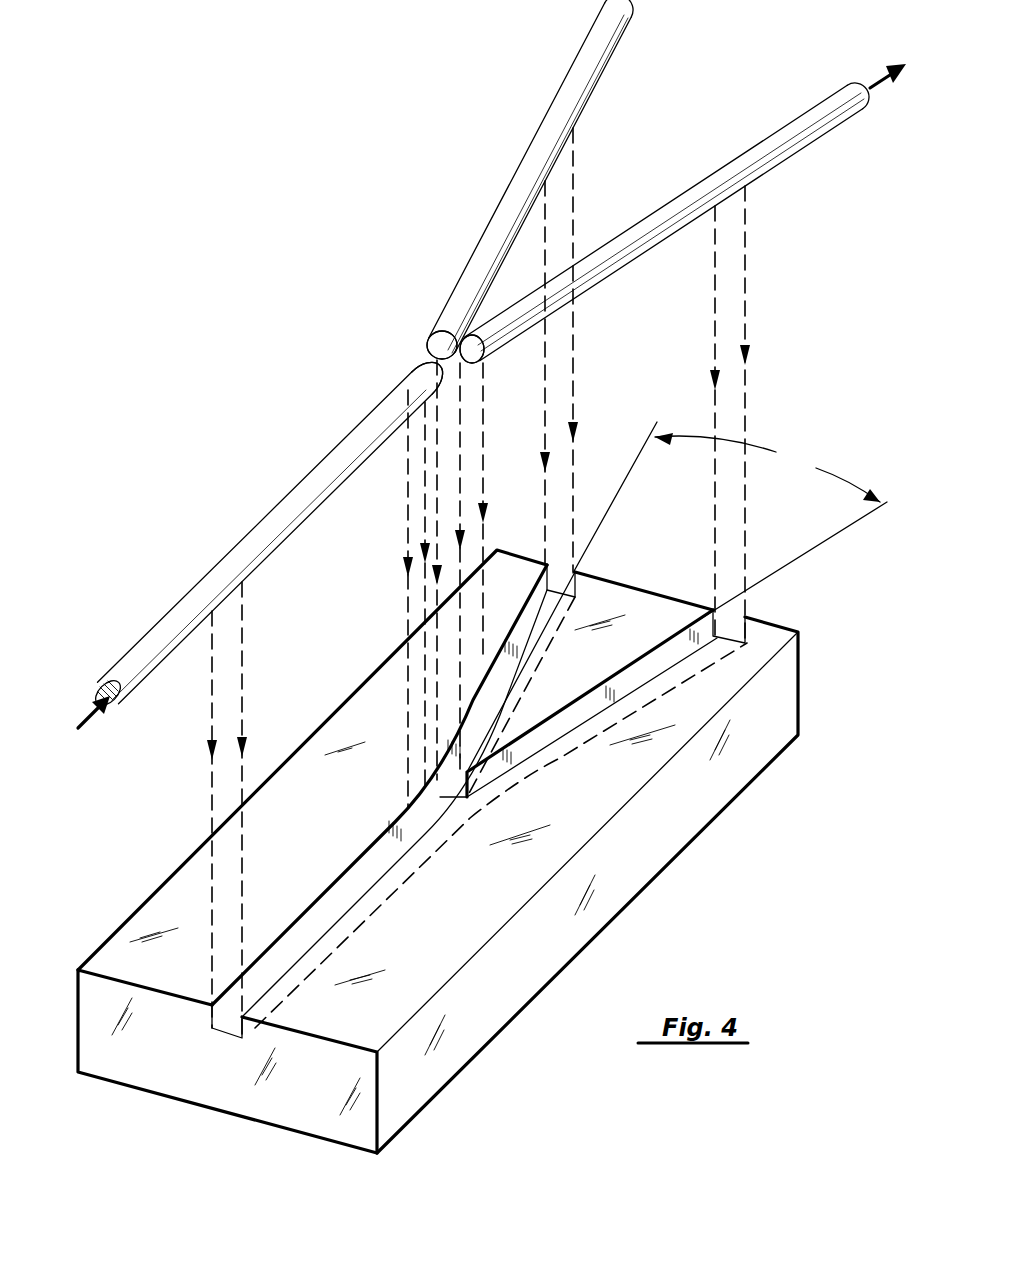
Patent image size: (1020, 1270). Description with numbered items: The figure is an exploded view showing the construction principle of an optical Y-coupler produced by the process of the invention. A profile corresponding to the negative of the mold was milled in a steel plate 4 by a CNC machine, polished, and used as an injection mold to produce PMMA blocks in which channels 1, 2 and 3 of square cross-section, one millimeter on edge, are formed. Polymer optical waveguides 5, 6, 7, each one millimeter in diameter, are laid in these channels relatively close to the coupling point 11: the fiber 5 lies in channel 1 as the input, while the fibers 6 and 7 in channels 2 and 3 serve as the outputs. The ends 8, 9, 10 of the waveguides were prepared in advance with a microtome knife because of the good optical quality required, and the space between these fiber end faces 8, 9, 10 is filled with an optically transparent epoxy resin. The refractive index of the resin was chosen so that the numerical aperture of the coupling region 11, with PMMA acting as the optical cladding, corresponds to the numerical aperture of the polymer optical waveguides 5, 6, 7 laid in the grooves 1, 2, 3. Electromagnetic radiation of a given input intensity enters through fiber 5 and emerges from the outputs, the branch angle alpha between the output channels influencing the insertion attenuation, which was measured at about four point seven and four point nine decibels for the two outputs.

The channel 1 is at (310, 920).
The channel 2 is at (535, 600).
The channel 3 is at (730, 622).
The steel plate 4 is at (497, 1012).
The polymer optical waveguide 5 is at (138, 655).
The polymer optical waveguide 6 is at (600, 54).
The polymer optical waveguide 7 is at (843, 128).
The fiber end face 8 is at (430, 378).
The fiber end face 9 is at (437, 346).
The fiber end face 10 is at (480, 356).
The coupling point 11 is at (440, 797).